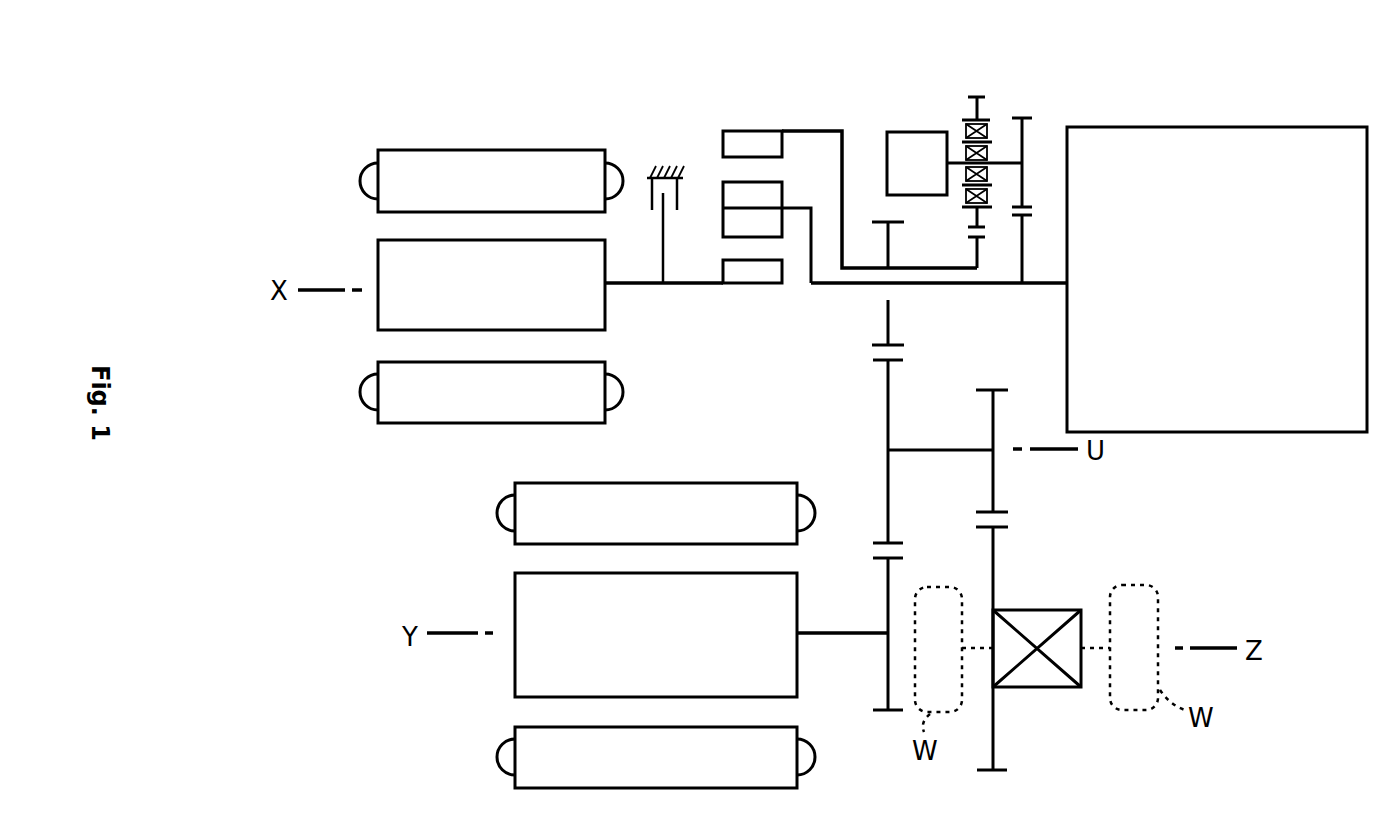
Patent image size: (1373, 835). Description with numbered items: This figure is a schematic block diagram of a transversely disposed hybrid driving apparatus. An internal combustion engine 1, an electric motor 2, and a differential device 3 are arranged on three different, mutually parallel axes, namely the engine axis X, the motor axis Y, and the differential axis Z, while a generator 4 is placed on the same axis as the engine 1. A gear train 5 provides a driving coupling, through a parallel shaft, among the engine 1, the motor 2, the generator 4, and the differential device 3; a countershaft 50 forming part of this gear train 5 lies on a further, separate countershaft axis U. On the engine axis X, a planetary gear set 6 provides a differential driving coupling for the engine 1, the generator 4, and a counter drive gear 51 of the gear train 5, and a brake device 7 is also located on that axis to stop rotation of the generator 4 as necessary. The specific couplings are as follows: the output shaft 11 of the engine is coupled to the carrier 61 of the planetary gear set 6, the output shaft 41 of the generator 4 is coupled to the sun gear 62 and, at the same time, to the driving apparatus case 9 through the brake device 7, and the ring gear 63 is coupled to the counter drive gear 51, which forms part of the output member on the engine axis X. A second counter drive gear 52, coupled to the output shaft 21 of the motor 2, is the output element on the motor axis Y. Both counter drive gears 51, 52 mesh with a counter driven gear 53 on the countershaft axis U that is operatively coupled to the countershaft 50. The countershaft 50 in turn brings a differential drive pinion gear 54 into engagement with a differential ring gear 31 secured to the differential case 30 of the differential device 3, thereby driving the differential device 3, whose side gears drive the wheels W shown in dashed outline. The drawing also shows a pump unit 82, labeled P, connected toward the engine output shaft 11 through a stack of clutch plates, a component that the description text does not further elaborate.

The engine 1 is at (1231, 433).
The motor 2 is at (510, 601).
The differential device 3 is at (1044, 636).
The generator 4 is at (372, 251).
The gear train 5 is at (926, 535).
The planetary gear set 6 is at (850, 197).
The brake device 7 is at (650, 195).
The driving apparatus case 9 is at (668, 164).
The output shaft 11 is at (968, 285).
The output shaft 21 is at (826, 635).
The differential case 30 is at (1040, 688).
The differential ring gear 31 is at (995, 566).
The output shaft 41 is at (650, 288).
The countershaft 50 is at (930, 450).
The counter drive gear 51 is at (886, 334).
The counter drive gear 52 is at (886, 580).
The counter driven gear 53 is at (890, 521).
The differential drive pinion gear 54 is at (996, 493).
The carrier 61 is at (796, 208).
The sun gear 62 is at (752, 281).
The ring gear 63 is at (768, 137).
The oil pump 82 is at (916, 133).